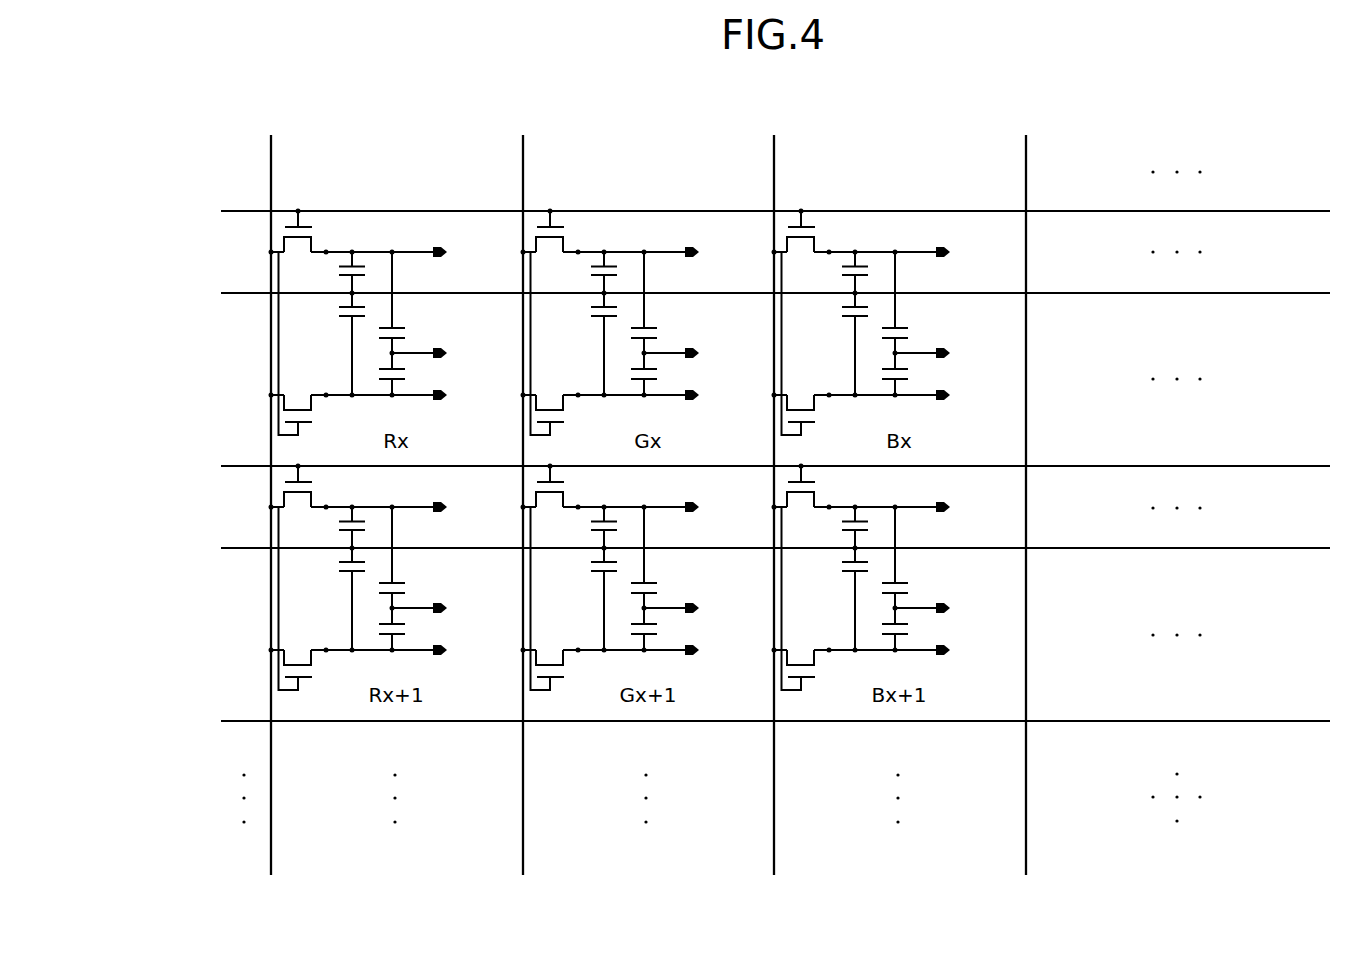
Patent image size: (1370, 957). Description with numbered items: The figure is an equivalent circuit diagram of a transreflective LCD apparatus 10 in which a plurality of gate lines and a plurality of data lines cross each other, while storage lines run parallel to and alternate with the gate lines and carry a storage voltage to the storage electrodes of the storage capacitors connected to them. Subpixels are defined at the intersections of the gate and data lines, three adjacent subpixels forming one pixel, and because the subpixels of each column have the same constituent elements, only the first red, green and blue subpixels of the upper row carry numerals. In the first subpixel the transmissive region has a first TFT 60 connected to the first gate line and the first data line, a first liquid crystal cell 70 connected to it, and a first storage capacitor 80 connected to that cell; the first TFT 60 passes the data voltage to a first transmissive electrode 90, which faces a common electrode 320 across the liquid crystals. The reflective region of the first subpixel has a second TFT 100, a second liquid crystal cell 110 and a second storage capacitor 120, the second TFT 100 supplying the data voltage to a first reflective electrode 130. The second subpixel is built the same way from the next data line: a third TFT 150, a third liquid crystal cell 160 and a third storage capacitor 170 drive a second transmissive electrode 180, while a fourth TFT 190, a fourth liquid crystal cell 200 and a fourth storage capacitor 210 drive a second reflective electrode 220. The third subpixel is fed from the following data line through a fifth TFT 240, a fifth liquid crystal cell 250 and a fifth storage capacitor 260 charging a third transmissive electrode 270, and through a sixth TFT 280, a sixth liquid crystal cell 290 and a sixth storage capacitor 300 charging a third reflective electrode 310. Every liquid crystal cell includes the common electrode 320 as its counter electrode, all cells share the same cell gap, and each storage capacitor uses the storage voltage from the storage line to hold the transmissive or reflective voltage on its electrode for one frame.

The transreflective LCD apparatus 10 is at (1347, 87).
The first TFT 60 is at (298, 256).
The first liquid crystal cell 70 is at (422, 333).
The first storage capacitor 80 is at (382, 273).
The first transmissive electrode 90 is at (450, 252).
The second TFT 100 is at (298, 386).
The second liquid crystal cell 110 is at (422, 374).
The second storage capacitor 120 is at (382, 313).
The first reflective electrode 130 is at (450, 395).
The third TFT 150 is at (550, 256).
The third liquid crystal cell 160 is at (674, 333).
The third storage capacitor 170 is at (634, 273).
The second transmissive electrode 180 is at (702, 252).
The fourth TFT 190 is at (550, 386).
The fourth liquid crystal cell 200 is at (674, 374).
The fourth storage capacitor 210 is at (634, 313).
The second reflective electrode 220 is at (702, 395).
The fifth TFT 240 is at (801, 256).
The fifth liquid crystal cell 250 is at (925, 333).
The fifth storage capacitor 260 is at (885, 273).
The third transmissive electrode 270 is at (953, 252).
The sixth TFT 280 is at (801, 386).
The sixth liquid crystal cell 290 is at (925, 374).
The sixth storage capacitor 300 is at (885, 313).
The third reflective electrode 310 is at (953, 395).
The common electrode 320 is at (450, 353).